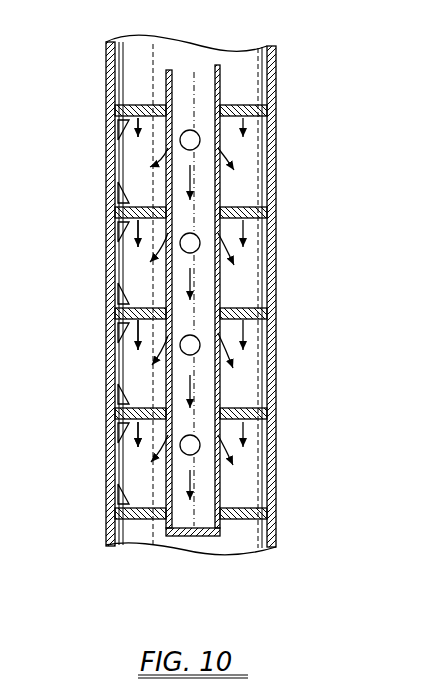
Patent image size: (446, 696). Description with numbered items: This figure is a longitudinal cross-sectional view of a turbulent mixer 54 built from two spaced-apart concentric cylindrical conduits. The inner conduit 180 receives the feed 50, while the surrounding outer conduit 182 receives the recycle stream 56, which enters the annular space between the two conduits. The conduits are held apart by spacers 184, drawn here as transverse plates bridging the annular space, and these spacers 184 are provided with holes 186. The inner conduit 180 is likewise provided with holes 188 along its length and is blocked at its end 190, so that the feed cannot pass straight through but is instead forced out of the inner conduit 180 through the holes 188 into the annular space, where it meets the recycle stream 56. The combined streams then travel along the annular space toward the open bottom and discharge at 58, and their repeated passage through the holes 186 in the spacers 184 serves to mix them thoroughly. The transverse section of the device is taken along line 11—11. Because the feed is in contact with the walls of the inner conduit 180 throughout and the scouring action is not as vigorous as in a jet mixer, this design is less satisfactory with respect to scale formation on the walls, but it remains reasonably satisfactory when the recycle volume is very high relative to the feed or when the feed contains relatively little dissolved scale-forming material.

The feed 50 is at (190, 86).
The mixer 54 is at (278, 298).
The recycle stream 56 is at (138, 66).
The discharge 58 is at (138, 522).
The line 11— 11 is at (312, 144).
The inner conduit 180 is at (222, 283).
The outer conduit 182 is at (270, 352).
The spacers 184 is at (132, 287).
The holes 186 is at (133, 400).
The holes 188 is at (190, 455).
The end 190 is at (201, 537).